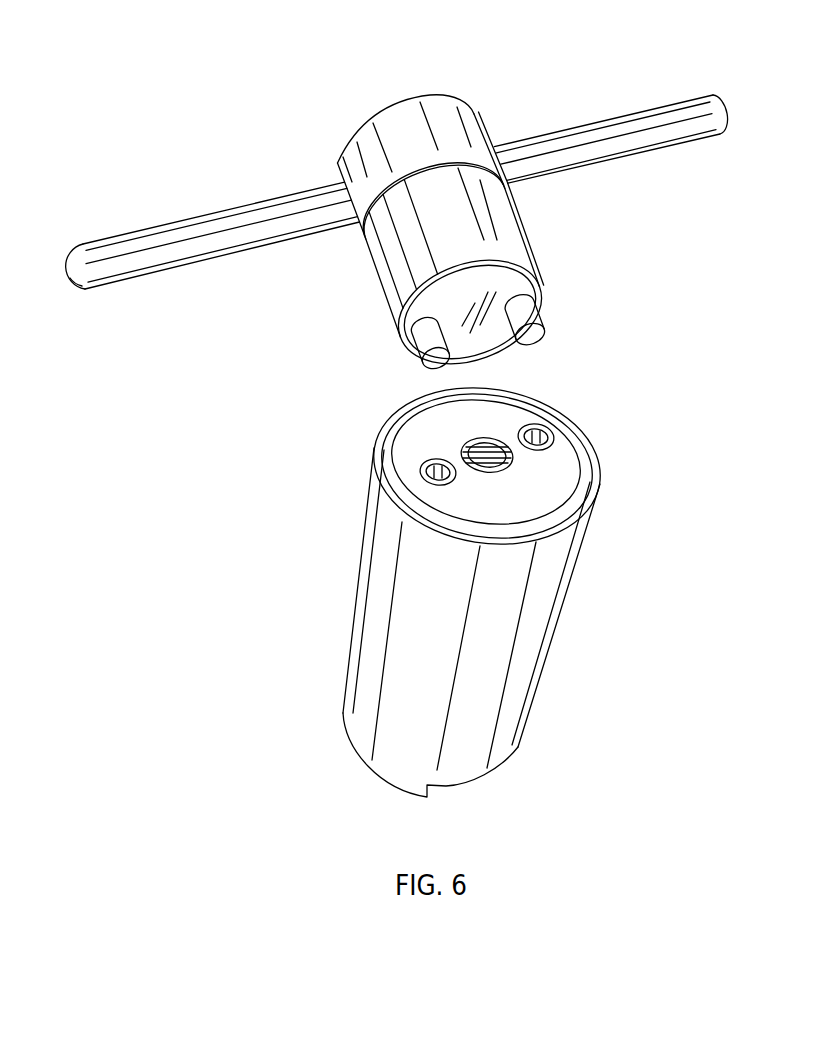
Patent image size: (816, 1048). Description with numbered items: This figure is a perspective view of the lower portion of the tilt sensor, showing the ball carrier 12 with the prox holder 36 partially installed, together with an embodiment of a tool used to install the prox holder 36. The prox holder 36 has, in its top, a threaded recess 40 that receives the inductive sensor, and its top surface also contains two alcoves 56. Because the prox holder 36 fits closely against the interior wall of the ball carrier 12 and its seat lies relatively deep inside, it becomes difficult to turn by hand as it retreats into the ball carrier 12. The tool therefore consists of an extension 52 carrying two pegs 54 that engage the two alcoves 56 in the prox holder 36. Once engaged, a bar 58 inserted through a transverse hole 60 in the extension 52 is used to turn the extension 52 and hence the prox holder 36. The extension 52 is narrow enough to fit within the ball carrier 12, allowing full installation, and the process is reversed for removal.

The ball carrier 12 is at (497, 638).
The prox holder 36 is at (545, 495).
The recess 40 is at (480, 448).
The extension 52 is at (488, 223).
The pegs 54 is at (535, 340).
The alcoves 56 is at (542, 434).
The bar 58 is at (605, 140).
The transverse hole 60 is at (337, 168).